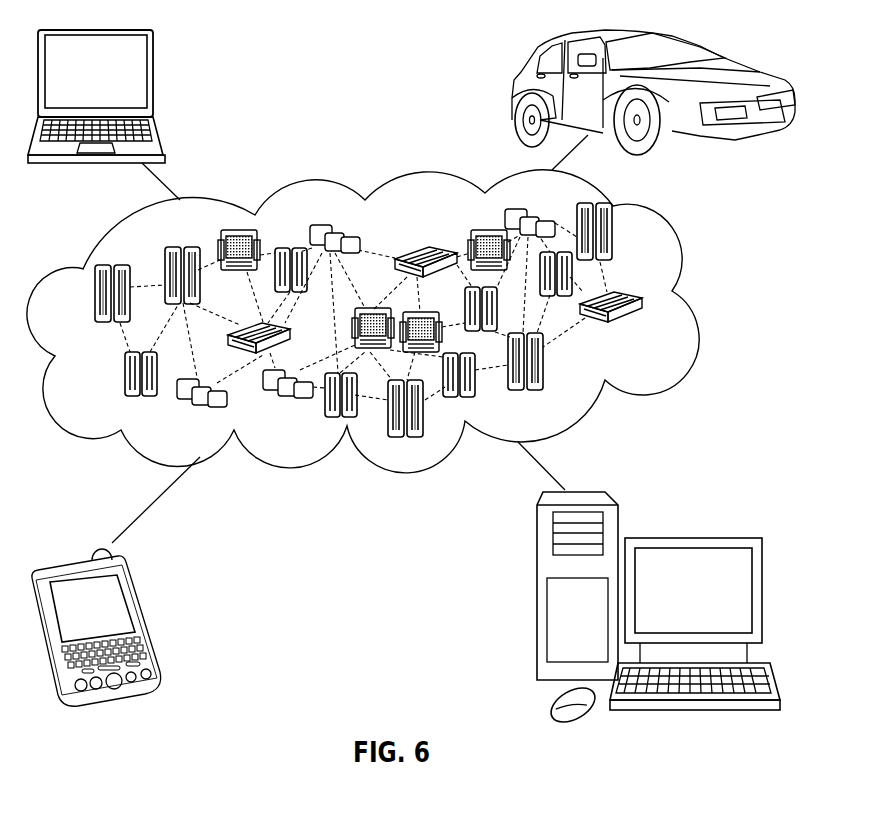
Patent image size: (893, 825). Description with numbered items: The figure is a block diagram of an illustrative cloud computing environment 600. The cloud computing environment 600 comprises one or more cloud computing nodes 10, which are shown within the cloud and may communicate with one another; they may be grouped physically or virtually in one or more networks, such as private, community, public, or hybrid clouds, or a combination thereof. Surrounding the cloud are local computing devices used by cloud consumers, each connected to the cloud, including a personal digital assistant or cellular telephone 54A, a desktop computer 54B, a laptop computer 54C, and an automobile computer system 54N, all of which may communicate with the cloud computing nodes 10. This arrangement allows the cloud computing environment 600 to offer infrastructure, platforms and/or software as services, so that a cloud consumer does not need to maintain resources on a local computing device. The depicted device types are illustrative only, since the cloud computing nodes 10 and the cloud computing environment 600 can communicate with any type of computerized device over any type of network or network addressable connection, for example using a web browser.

The laptop computer 54C is at (153, 80).
The automobile computer system 54N is at (510, 92).
The personal digital assistant (PDA) or cellular telephone 54A is at (145, 613).
The desktop computer 54B is at (690, 538).
The cloud computing environment 600 is at (392, 321).
The cloud computing nodes 10 is at (714, 295).